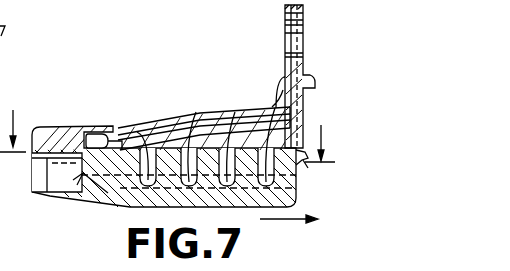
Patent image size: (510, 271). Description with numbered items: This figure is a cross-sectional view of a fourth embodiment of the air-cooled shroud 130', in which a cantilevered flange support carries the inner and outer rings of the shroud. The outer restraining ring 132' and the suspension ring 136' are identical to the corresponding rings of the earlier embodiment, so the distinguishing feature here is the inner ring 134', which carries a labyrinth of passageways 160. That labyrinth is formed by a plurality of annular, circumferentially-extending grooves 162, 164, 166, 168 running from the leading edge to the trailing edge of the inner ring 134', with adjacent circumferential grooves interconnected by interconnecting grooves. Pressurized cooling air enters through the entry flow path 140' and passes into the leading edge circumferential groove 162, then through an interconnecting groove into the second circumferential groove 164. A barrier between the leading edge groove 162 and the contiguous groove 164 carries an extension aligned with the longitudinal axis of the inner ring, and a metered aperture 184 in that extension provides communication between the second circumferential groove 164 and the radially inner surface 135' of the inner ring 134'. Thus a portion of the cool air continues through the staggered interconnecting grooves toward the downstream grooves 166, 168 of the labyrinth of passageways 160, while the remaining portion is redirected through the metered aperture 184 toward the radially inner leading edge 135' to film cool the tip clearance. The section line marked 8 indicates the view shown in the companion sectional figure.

The air-cooled shroud 130' is at (252, 76).
The outer restraining ring 132' is at (320, 169).
The inner ring 134' is at (180, 191).
The radially inner surface 135' is at (41, 197).
The suspension ring 136' is at (211, 103).
The entry flow path 140' is at (92, 118).
The leading edge circumferential groove 162 is at (140, 131).
The second circumferential groove 164 is at (200, 110).
The circumferential groove 166 is at (242, 106).
The circumferential groove 168 is at (272, 104).
The metered aperture 184 is at (100, 192).
The labyrinth of passageways 160 is at (264, 266).
The section line 8- 8 is at (167, 124).